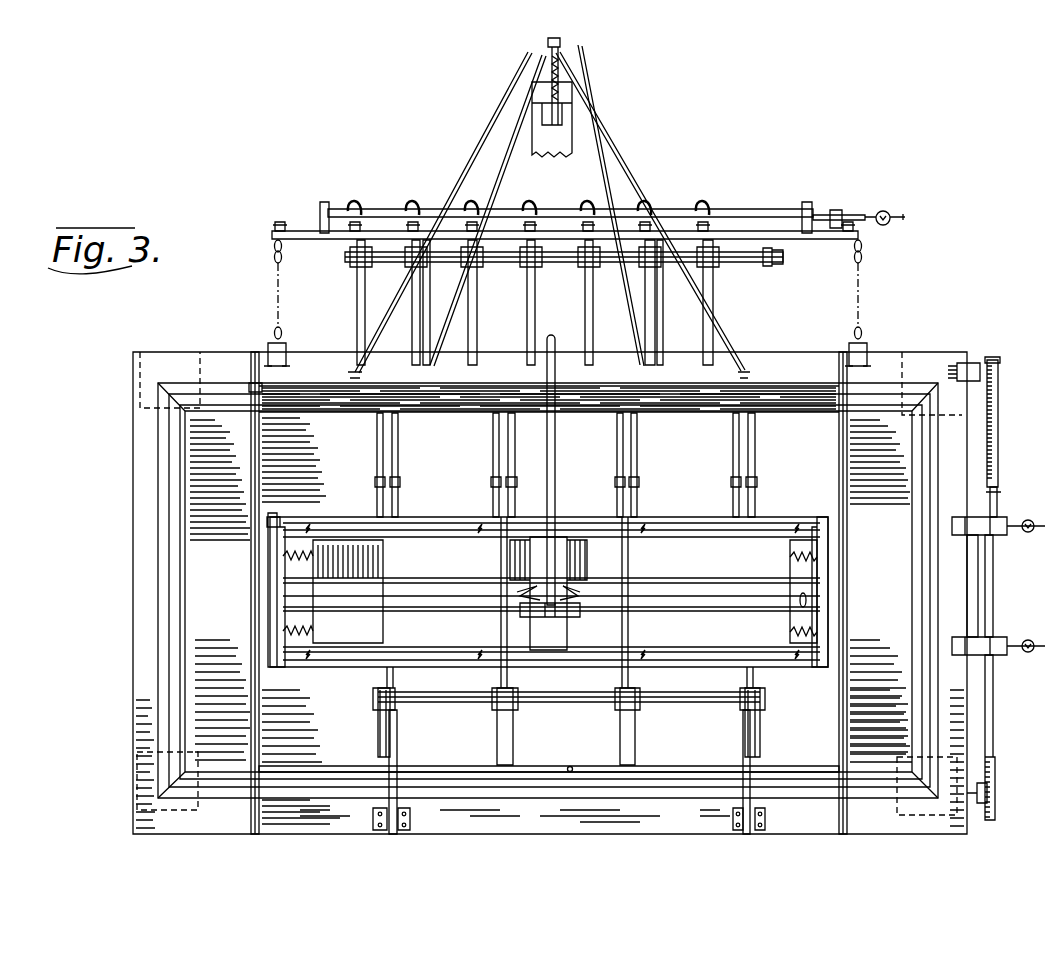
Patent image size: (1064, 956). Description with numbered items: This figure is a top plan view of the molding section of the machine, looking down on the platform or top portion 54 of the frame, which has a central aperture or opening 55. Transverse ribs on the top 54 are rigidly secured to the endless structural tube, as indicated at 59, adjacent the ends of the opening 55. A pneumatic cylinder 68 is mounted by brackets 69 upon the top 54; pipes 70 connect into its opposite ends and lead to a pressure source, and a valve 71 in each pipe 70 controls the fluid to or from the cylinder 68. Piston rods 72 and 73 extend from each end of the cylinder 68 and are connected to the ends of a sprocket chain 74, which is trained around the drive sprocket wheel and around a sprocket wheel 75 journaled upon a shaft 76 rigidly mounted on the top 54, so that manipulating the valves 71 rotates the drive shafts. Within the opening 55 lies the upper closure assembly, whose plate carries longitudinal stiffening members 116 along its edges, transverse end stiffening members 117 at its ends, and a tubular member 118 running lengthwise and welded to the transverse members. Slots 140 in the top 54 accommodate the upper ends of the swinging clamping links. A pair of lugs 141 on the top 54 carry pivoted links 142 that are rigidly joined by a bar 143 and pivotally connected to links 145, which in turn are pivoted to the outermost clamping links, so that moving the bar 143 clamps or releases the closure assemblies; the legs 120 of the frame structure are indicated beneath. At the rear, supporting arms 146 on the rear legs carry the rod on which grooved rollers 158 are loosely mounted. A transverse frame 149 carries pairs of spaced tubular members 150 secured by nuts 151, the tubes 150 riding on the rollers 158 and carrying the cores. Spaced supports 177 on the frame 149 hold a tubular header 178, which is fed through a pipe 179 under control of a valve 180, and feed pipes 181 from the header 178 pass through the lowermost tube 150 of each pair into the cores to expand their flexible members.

The platform or top portion 54 is at (783, 432).
The aperture or opening 55 is at (692, 517).
The connection of ribs to endless tube 59 is at (263, 415).
The pneumatic cylinder 68 is at (1000, 587).
The brackets 69 is at (963, 536).
The pipes 70 is at (1013, 517).
The valve 71 is at (1023, 530).
The piston rod 72 is at (995, 713).
The piston rod 73 is at (998, 497).
The sprocket chain 74 is at (998, 437).
The sprocket wheel 75 is at (1000, 363).
The shaft 76 is at (978, 363).
The longitudinal stiffening members 116 is at (665, 530).
The transverse end stiffening members 117 is at (317, 570).
The tubular member 118 is at (676, 583).
The A-frame legs 120 is at (632, 164).
The slots 140 is at (515, 740).
The lugs 141 is at (415, 806).
The link 142 is at (383, 763).
The bar 143 is at (600, 778).
The links 145 is at (387, 715).
The supporting arms 146 is at (427, 331).
The transverse frame 149 is at (753, 232).
The tubular members 150 is at (715, 328).
The nuts 151 is at (718, 212).
The grooved rollers 158 is at (488, 248).
The supports 177 is at (323, 202).
The tubular header 178 is at (780, 211).
The pipe 179 is at (858, 212).
The valve 180 is at (887, 200).
The feed pipes 181 is at (355, 206).